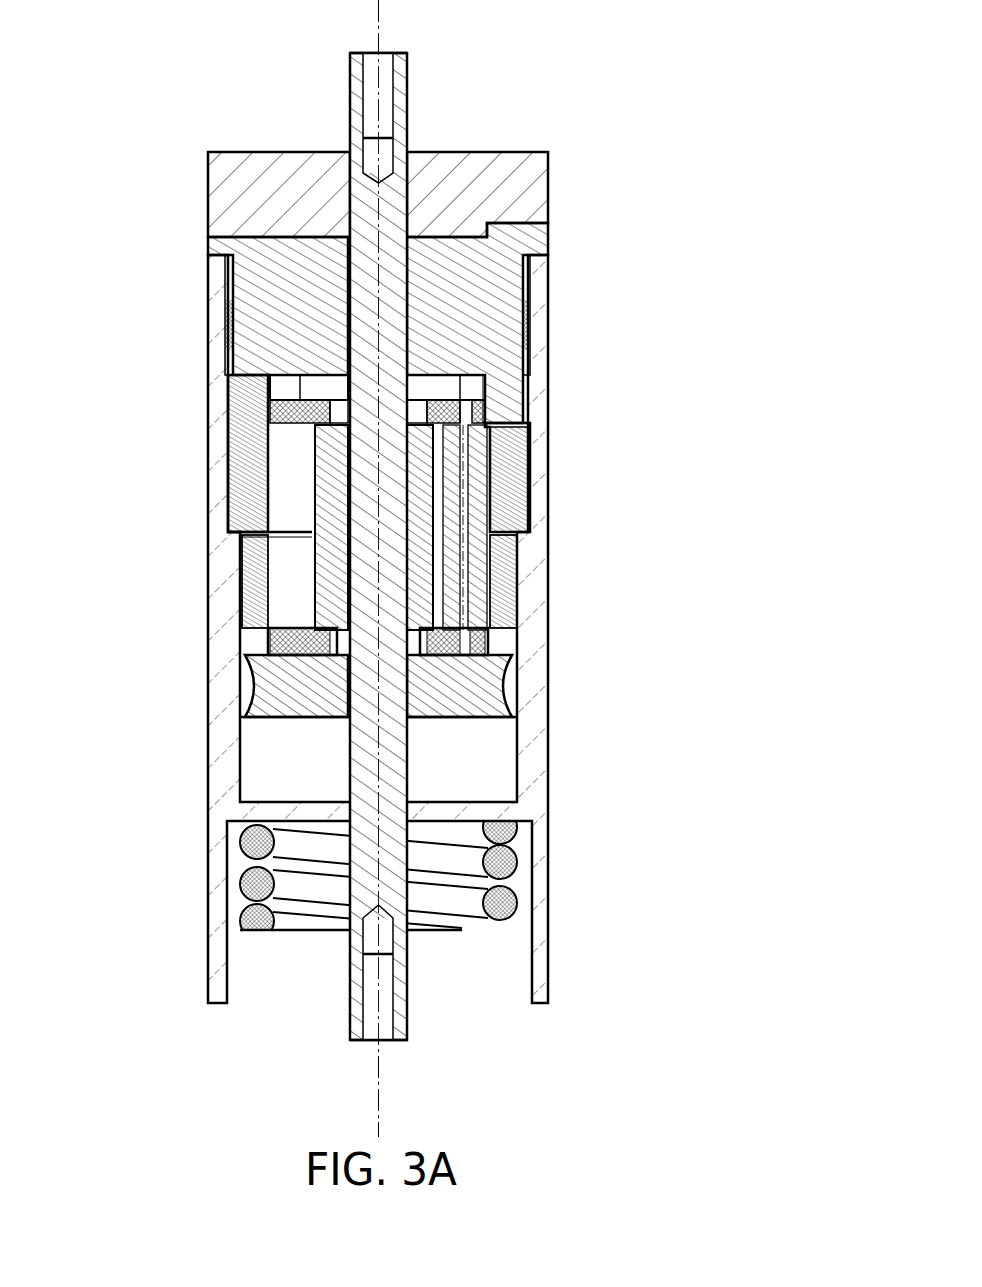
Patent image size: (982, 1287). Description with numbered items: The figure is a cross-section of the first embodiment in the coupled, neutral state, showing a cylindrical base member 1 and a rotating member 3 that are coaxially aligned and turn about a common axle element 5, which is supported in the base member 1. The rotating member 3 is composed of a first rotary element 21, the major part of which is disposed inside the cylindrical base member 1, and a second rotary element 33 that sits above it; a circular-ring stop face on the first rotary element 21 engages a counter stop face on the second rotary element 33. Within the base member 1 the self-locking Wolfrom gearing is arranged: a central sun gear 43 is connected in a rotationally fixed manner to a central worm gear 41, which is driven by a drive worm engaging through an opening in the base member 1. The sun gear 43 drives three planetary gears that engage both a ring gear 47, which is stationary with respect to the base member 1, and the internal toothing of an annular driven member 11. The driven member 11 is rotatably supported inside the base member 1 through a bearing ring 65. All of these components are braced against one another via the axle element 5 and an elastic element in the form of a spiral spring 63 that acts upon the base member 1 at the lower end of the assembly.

The base member 1 is at (550, 763).
The rotating member 3 is at (465, 287).
The axle element 5 is at (410, 104).
The driven member 11 is at (530, 501).
The first rotary element 21 is at (552, 240).
The second rotary element 33 is at (552, 188).
The worm gear 41 is at (305, 718).
The sun gear 43 is at (405, 568).
The ring gear 47 is at (518, 573).
The spiral spring 63 is at (470, 920).
The bearing ring 65 is at (225, 332).